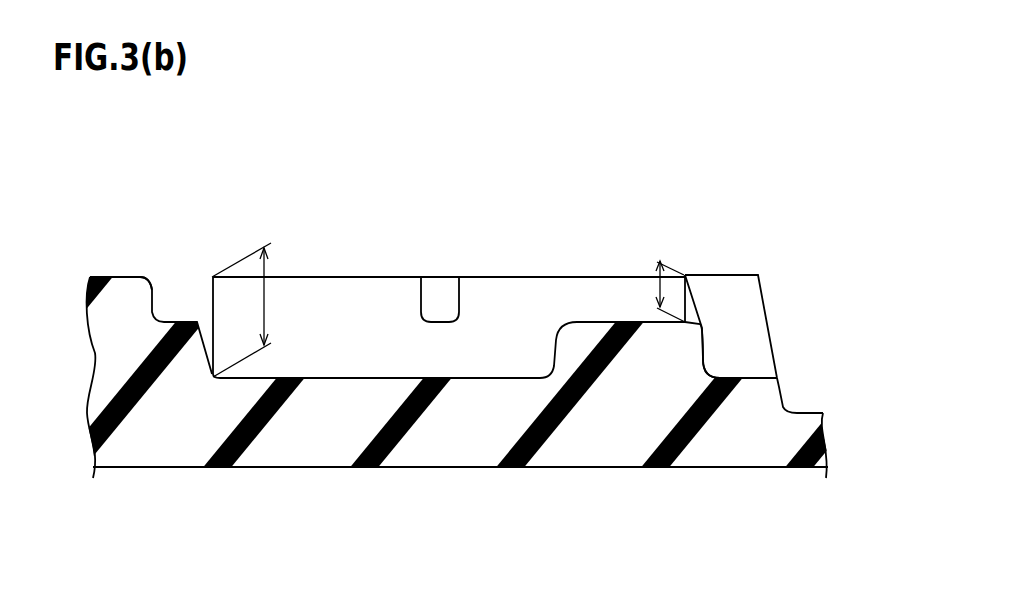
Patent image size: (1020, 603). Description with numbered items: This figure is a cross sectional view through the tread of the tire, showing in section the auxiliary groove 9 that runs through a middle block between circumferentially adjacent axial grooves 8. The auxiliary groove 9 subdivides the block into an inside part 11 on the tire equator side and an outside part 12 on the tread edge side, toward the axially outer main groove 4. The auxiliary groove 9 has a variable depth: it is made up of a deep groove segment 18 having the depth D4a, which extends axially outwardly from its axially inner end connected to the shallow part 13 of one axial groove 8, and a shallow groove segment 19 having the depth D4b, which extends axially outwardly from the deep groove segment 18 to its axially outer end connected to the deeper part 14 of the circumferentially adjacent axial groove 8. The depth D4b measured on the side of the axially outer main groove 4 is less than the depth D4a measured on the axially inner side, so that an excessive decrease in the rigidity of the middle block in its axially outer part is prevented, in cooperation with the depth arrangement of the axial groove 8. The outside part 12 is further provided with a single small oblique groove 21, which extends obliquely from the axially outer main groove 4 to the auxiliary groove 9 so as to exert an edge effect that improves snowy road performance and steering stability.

The axially outer main groove 4 is at (805, 355).
The inside part 11 is at (115, 277).
The axial groove 8 is at (176, 274).
The shallow part 13 is at (173, 302).
The auxiliary groove 9 is at (495, 242).
The outside part 12 is at (449, 261).
The deep groove segment 18 is at (497, 377).
The shallow groove segment 19 is at (610, 322).
The small oblique groove 21 is at (453, 308).
The deeper part 14 is at (728, 373).
The depth D4a is at (266, 304).
The depth D4b is at (682, 306).